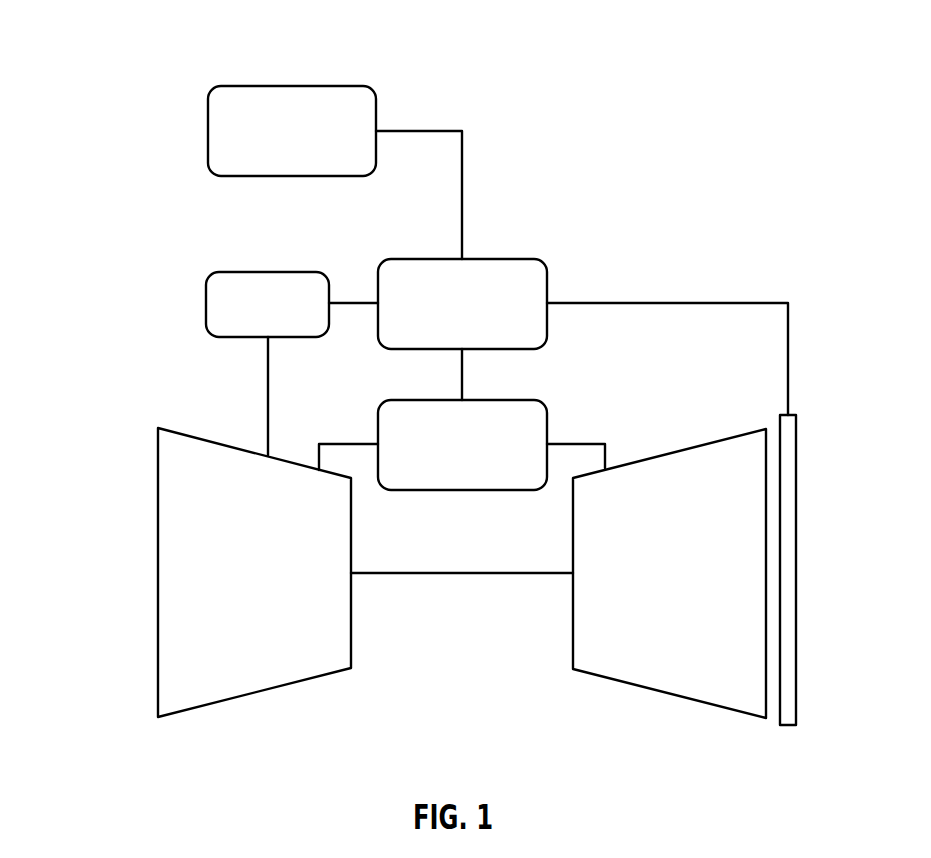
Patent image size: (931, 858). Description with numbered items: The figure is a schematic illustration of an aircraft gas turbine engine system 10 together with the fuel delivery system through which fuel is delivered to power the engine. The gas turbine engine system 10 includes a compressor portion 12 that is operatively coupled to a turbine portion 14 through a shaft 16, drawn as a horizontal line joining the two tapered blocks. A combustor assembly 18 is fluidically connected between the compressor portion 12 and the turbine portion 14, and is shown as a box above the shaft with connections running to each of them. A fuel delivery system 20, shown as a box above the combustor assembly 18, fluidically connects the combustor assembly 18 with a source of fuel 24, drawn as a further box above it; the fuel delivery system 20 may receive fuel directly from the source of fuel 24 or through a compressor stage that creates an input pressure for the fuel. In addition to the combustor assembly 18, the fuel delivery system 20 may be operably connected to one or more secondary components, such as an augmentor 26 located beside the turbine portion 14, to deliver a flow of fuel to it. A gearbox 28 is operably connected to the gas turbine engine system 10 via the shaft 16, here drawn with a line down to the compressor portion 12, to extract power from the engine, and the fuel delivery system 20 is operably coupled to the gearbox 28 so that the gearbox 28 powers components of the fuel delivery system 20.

The gas turbine engine system 10 is at (133, 50).
The compressor portion 12 is at (208, 685).
The turbine portion 14 is at (678, 682).
The shaft 16 is at (465, 575).
The combustor assembly 18 is at (467, 478).
The fuel delivery system 20 is at (497, 267).
The source of fuel 24 is at (293, 105).
The augmentor 26 is at (797, 507).
The gearbox 28 is at (216, 302).